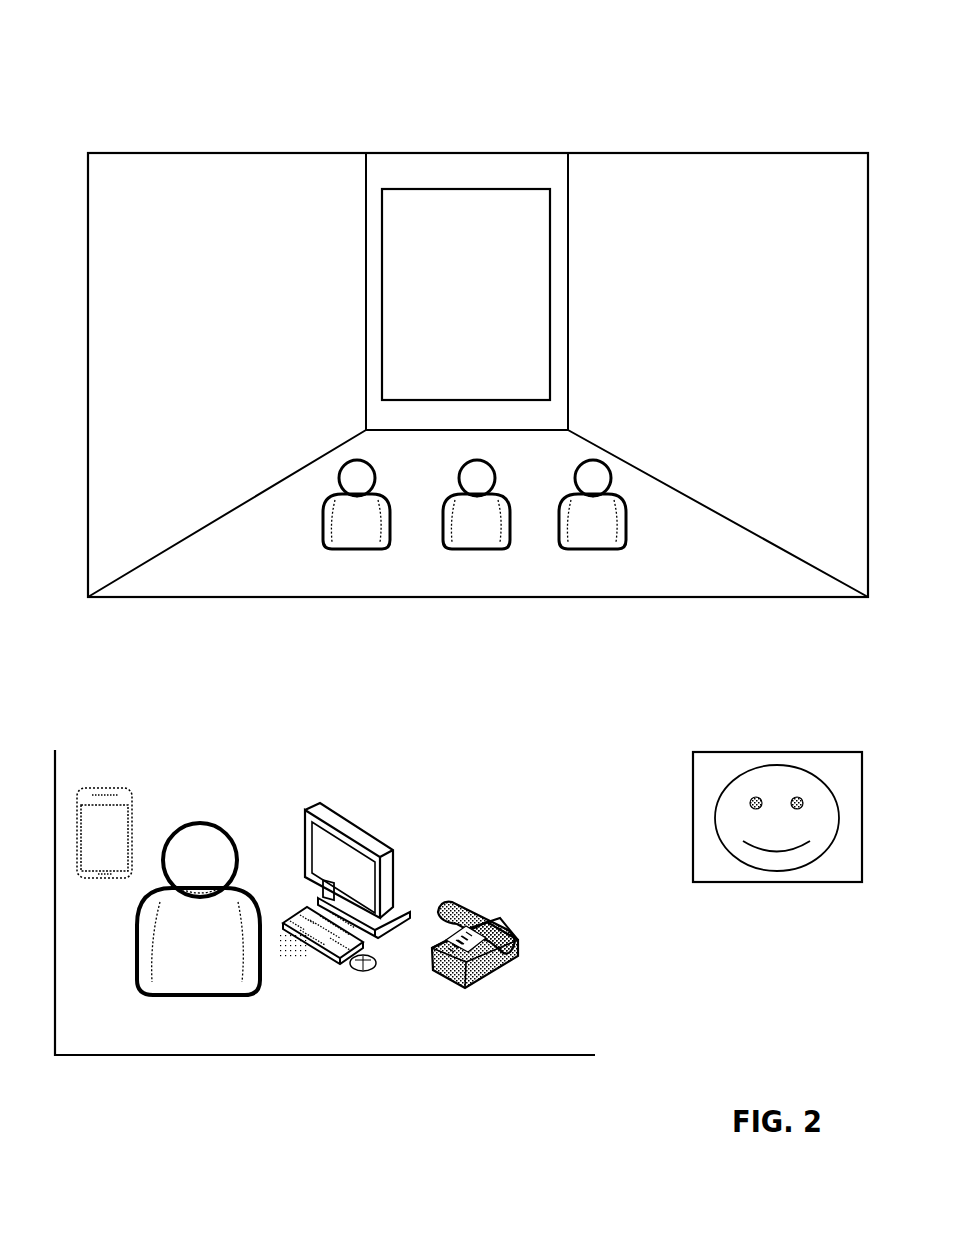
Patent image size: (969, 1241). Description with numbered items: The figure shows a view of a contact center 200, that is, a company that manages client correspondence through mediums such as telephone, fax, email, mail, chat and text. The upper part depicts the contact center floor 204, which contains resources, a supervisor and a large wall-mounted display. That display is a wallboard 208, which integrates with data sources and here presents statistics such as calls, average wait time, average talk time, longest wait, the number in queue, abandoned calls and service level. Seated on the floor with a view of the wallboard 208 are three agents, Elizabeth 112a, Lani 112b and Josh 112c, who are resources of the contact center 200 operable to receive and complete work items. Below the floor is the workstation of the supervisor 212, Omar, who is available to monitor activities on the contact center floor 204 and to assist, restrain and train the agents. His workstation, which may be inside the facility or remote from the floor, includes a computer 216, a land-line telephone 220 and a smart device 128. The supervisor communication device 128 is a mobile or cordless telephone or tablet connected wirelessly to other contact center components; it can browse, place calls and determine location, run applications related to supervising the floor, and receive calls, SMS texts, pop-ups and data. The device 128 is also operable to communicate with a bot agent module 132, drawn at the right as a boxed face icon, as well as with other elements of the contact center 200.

The contact center 200 is at (130, 90).
The contact center floor 204 is at (290, 153).
The wallboard 208 is at (467, 189).
The Elizabeth 112a is at (340, 583).
The Lani 112b is at (478, 583).
The Josh 112c is at (602, 583).
The supervisor communication device 128 is at (103, 788).
The supervisor 212 is at (200, 823).
The computer 216 is at (353, 817).
The land-line telephone 220 is at (487, 917).
The bot agent module 132 is at (778, 752).